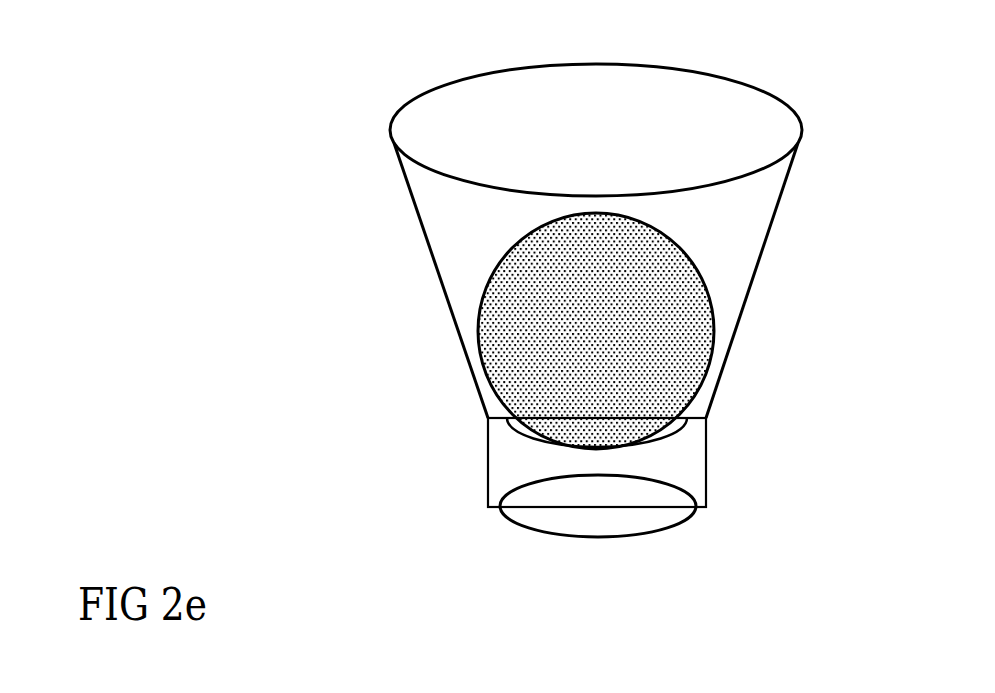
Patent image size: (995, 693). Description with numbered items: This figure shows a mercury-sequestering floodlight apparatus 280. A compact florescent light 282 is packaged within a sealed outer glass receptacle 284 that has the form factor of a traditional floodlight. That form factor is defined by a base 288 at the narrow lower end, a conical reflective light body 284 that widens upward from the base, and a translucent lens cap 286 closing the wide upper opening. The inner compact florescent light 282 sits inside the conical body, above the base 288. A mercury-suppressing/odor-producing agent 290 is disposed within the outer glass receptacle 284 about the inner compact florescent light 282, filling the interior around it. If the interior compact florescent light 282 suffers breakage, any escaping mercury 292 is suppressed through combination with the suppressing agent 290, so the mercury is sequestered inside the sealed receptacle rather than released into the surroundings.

The mercury-sequestering floodlight apparatus 280 is at (283, 380).
The compact florescent light 282 is at (487, 382).
The sealed outer glass receptacle 284 is at (412, 259).
The translucent lens cap 286 is at (768, 93).
The base 288 is at (487, 477).
The mercury-suppressing/odor-producing agent 290 is at (734, 227).
The escaping mercury 292 is at (664, 358).